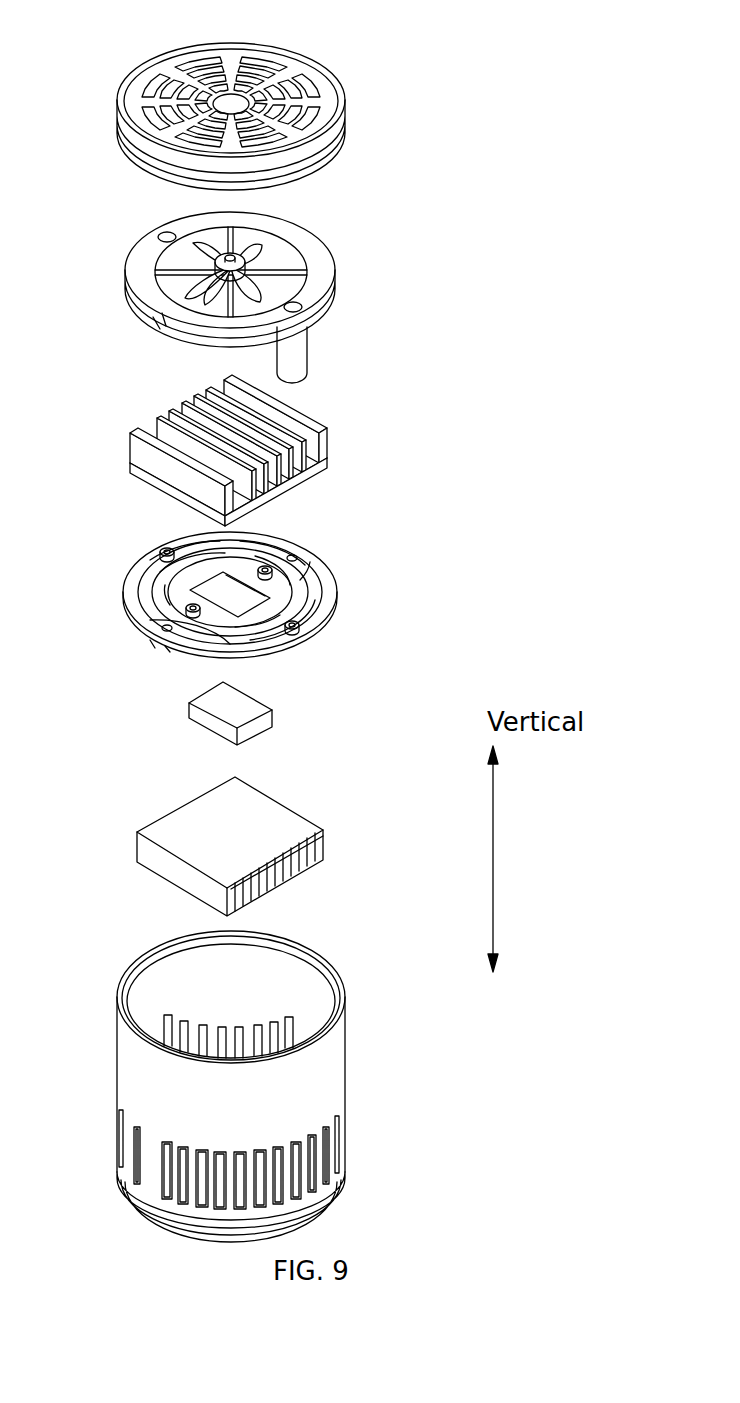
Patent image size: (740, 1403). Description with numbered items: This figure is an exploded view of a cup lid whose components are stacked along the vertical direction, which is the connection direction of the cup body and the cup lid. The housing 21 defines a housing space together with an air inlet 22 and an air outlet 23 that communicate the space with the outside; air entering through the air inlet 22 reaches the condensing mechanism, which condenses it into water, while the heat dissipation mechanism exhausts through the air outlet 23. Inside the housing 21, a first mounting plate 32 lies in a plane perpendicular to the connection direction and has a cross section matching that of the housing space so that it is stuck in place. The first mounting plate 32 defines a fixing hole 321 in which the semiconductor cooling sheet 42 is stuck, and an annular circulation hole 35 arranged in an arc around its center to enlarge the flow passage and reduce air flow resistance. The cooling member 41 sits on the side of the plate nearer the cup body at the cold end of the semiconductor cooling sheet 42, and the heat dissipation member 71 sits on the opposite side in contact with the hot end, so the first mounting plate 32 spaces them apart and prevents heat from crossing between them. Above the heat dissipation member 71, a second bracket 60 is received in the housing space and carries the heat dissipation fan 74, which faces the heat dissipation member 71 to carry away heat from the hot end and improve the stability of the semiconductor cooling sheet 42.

The air outlet 23 is at (327, 72).
The heat dissipation fan 74 is at (233, 262).
The second bracket 60 is at (323, 275).
The heat dissipation member 71 is at (313, 441).
The fixing hole 321 is at (218, 586).
The annular circulation hole 35 is at (313, 578).
The first mounting plate 32 is at (327, 598).
The semiconductor cooling sheet 42 is at (243, 710).
The cooling member 41 is at (293, 830).
The housing 21 is at (330, 1073).
The air inlet 22 is at (355, 1135).